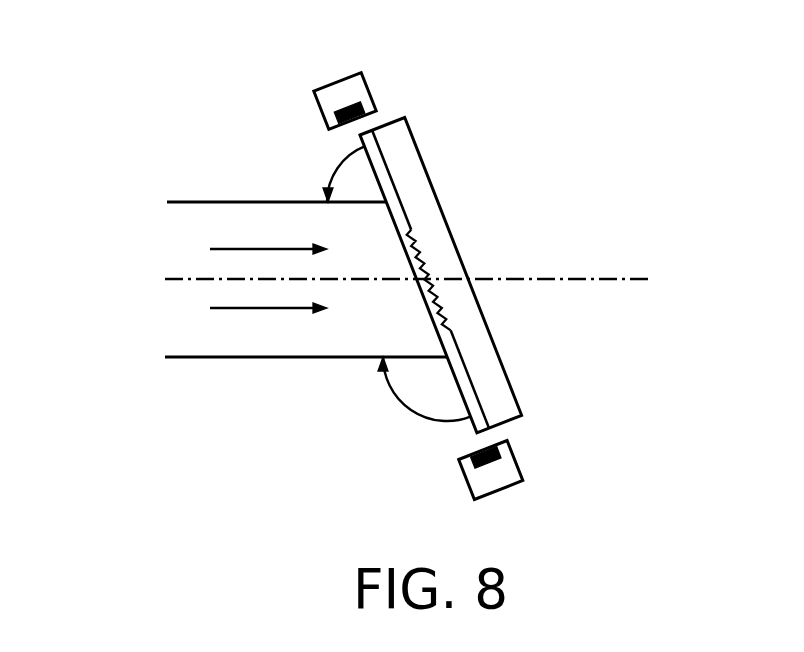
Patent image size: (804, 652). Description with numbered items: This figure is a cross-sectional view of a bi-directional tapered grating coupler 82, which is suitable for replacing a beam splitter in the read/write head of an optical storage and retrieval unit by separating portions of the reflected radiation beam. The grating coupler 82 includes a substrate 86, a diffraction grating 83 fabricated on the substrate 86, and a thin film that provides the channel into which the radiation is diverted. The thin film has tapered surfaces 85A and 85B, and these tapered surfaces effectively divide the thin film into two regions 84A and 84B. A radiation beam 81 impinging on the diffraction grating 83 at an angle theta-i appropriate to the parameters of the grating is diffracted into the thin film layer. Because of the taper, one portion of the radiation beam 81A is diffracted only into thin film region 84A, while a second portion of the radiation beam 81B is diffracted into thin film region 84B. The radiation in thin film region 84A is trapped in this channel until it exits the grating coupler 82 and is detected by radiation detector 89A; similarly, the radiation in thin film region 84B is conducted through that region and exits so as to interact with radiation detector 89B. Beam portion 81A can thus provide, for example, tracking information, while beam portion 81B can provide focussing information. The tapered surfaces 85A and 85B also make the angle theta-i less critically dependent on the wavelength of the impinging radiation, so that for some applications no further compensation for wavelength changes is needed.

The radiation beam 81 is at (140, 278).
The portion of the radiation beam 81A is at (245, 248).
The second portion of the radiation beam 81B is at (260, 310).
The grating coupler 82 is at (454, 268).
The diffraction grating 83 is at (447, 310).
The thin film region 84A is at (360, 148).
The thin film region 84B is at (477, 430).
The tapered surface 85A is at (418, 260).
The tapered surface 85B is at (437, 310).
The substrate 86 is at (405, 153).
The radiation detector 89A is at (353, 75).
The radiation detector 89B is at (507, 453).